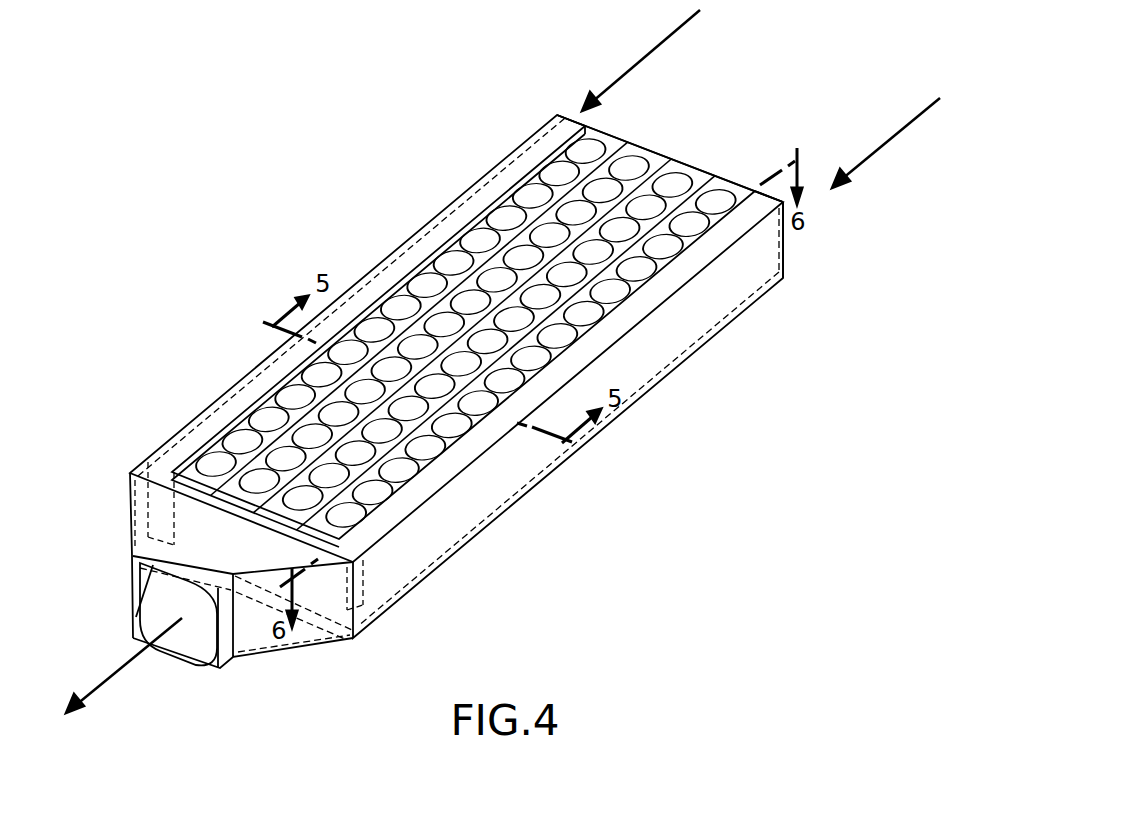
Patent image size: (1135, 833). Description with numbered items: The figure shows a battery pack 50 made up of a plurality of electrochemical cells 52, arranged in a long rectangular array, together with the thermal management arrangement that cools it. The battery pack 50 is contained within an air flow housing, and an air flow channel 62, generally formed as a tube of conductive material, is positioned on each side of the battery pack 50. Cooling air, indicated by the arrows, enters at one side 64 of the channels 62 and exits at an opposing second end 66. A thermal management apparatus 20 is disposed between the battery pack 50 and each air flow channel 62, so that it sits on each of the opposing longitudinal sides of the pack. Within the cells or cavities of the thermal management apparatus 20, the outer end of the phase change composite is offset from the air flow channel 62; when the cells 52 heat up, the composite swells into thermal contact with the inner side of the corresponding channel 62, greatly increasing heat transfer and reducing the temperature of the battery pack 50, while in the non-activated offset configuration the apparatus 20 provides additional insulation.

The thermal management apparatus 20 is at (166, 511).
The battery pack 50 is at (672, 160).
The electrochemical cells 52 is at (586, 151).
The air flow channel 62 is at (494, 188).
The one side of the channels 64 is at (570, 112).
The opposing second end 66 is at (160, 465).